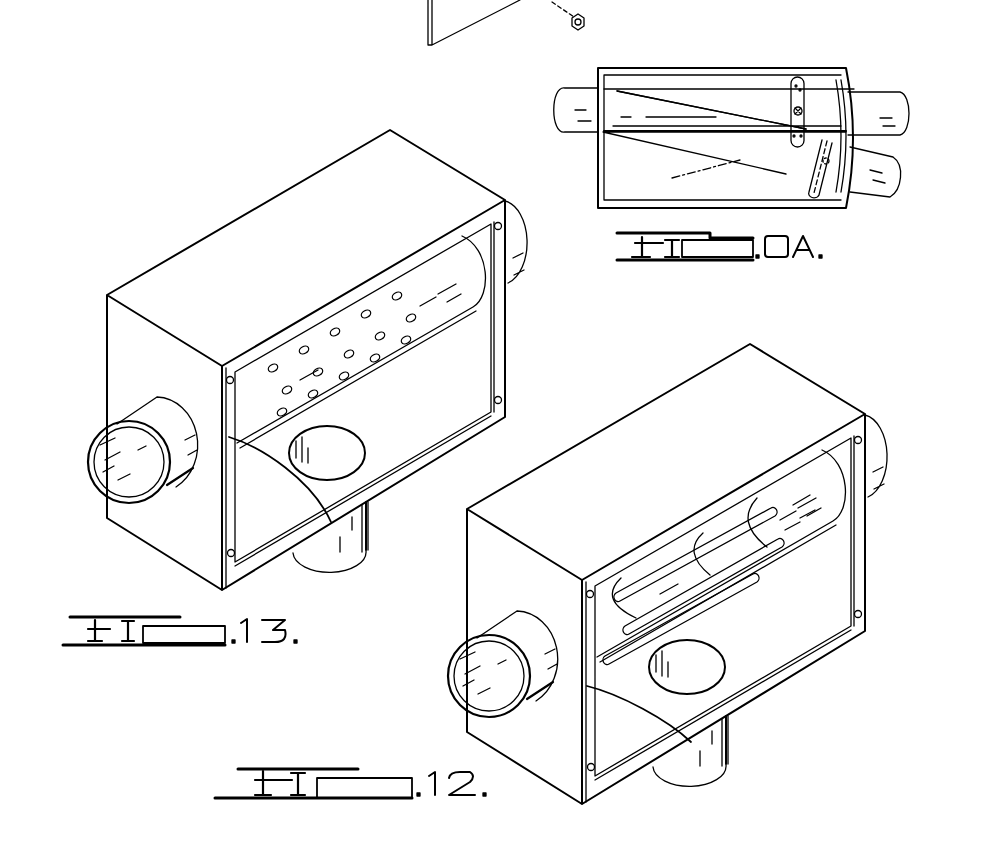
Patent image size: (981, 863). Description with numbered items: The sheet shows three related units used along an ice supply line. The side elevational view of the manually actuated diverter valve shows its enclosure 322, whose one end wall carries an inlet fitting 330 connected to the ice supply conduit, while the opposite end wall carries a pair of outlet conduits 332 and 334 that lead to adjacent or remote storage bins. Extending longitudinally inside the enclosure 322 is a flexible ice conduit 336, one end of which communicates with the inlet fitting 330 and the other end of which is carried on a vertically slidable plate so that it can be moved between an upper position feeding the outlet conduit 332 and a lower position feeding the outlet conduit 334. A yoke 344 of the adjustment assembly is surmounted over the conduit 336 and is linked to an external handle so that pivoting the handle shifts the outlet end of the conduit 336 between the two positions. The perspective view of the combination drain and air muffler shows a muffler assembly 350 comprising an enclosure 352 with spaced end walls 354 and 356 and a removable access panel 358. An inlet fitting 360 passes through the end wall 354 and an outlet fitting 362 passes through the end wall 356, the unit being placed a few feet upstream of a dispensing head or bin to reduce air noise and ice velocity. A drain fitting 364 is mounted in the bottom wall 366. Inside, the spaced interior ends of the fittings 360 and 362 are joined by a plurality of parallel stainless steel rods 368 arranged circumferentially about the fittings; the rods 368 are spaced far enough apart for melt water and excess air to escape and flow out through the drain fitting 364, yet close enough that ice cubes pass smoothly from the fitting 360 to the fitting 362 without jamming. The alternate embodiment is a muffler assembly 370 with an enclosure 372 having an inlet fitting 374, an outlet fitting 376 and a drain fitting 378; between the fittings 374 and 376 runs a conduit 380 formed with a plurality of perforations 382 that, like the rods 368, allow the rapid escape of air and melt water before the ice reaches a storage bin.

In FIG. 9A, the enclosure 322 is at (718, 62).
In FIG. 9A, the inlet fitting 330 is at (580, 88).
In FIG. 9A, the outlet conduit 332 is at (875, 95).
In FIG. 9A, the outlet conduit 334 is at (875, 188).
In FIG. 9A, the flexible ice conduit 336 is at (693, 122).
In FIG. 9A, the yoke 344 is at (808, 72).
In FIG. 12, the muffler assembly 350 is at (637, 395).
In FIG. 12, the enclosure 352 is at (795, 385).
In FIG. 12, the end wall 354 is at (540, 758).
In FIG. 12, the end wall 356 is at (834, 604).
In FIG. 12, the removable access panel 358 is at (633, 762).
In FIG. 12, the inlet fitting 360 is at (505, 625).
In FIG. 12, the outlet fitting 362 is at (880, 443).
In FIG. 12, the drain fitting 364 is at (705, 785).
In FIG. 12, the bottom wall 366 is at (774, 657).
In FIG. 12, the rods 368 is at (728, 562).
In FIG. 13, the muffler assembly 370 is at (247, 207).
In FIG. 13, the enclosure 372 is at (435, 170).
In FIG. 13, the inlet fitting 374 is at (165, 492).
In FIG. 13, the outlet fitting 376 is at (507, 283).
In FIG. 13, the drain fitting 378 is at (365, 520).
In FIG. 13, the conduit 380 is at (466, 322).
In FIG. 13, the perforations 382 is at (307, 347).